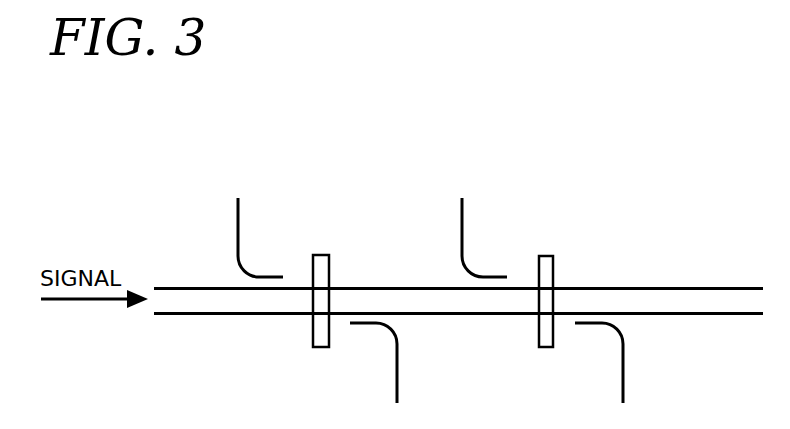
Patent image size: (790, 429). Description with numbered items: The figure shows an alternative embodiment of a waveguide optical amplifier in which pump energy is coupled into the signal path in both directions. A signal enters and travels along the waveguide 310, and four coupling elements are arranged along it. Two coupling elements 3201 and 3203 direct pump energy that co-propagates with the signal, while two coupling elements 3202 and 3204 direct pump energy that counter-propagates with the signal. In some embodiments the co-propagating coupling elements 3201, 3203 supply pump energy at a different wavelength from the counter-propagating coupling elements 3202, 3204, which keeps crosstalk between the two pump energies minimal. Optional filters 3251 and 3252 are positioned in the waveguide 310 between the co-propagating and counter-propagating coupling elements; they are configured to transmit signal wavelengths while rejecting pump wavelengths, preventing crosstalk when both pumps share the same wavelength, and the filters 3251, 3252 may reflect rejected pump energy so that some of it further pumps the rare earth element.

The waveguide 310 is at (617, 287).
The coupling element 3201 is at (237, 233).
The coupling element 3202 is at (397, 383).
The coupling element 3203 is at (462, 233).
The coupling element 3204 is at (623, 383).
The filter 3251 is at (313, 333).
The filter 3252 is at (539, 332).